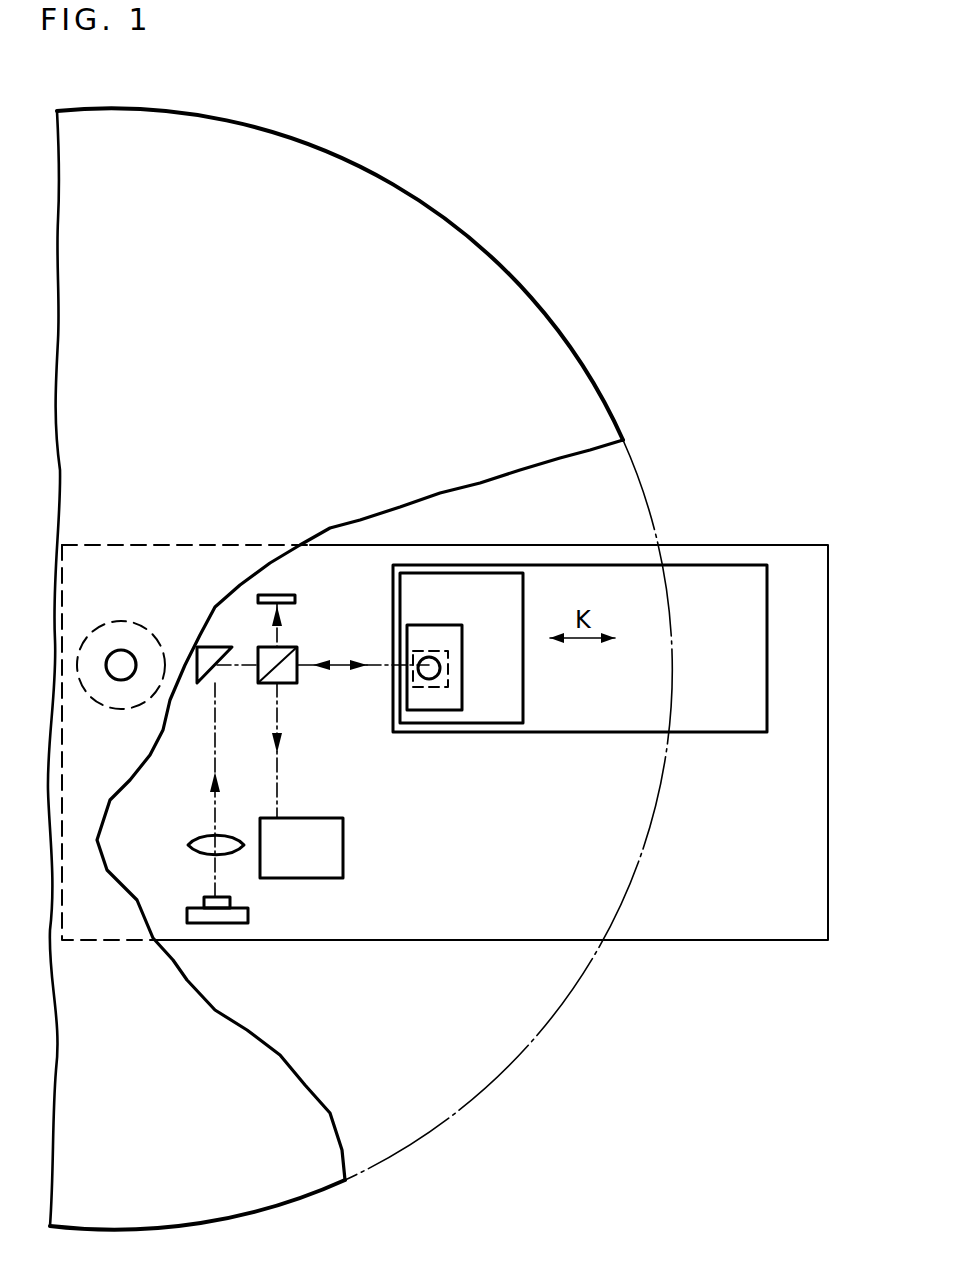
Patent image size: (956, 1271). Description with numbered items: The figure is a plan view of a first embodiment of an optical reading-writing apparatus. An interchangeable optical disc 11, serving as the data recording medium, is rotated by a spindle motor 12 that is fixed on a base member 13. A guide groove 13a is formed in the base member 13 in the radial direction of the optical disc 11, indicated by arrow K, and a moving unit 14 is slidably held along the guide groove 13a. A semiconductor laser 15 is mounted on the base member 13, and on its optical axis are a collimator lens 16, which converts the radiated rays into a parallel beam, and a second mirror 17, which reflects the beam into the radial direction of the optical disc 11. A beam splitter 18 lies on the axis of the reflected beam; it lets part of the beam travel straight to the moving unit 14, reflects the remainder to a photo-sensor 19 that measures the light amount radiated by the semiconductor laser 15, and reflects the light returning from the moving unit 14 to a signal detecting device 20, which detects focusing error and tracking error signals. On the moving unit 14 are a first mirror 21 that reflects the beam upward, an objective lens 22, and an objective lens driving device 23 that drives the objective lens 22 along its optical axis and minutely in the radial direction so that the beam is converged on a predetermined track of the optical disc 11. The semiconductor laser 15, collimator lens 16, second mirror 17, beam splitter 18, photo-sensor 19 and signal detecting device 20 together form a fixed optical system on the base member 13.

The optical disc 11 is at (540, 335).
The spindle motor 12 is at (106, 622).
The base member 13 is at (793, 560).
The guide groove 13a is at (725, 580).
The moving unit 14 is at (510, 570).
The semiconductor laser 15 is at (214, 915).
The collimator lens 16 is at (232, 853).
The second mirror 17 is at (213, 647).
The beam splitter 18 is at (260, 645).
The photo-sensor 19 is at (283, 595).
The signal detecting device 20 is at (310, 875).
The first mirror 21 is at (429, 680).
The objective lens 22 is at (413, 705).
The objective lens driving device 23 is at (450, 700).